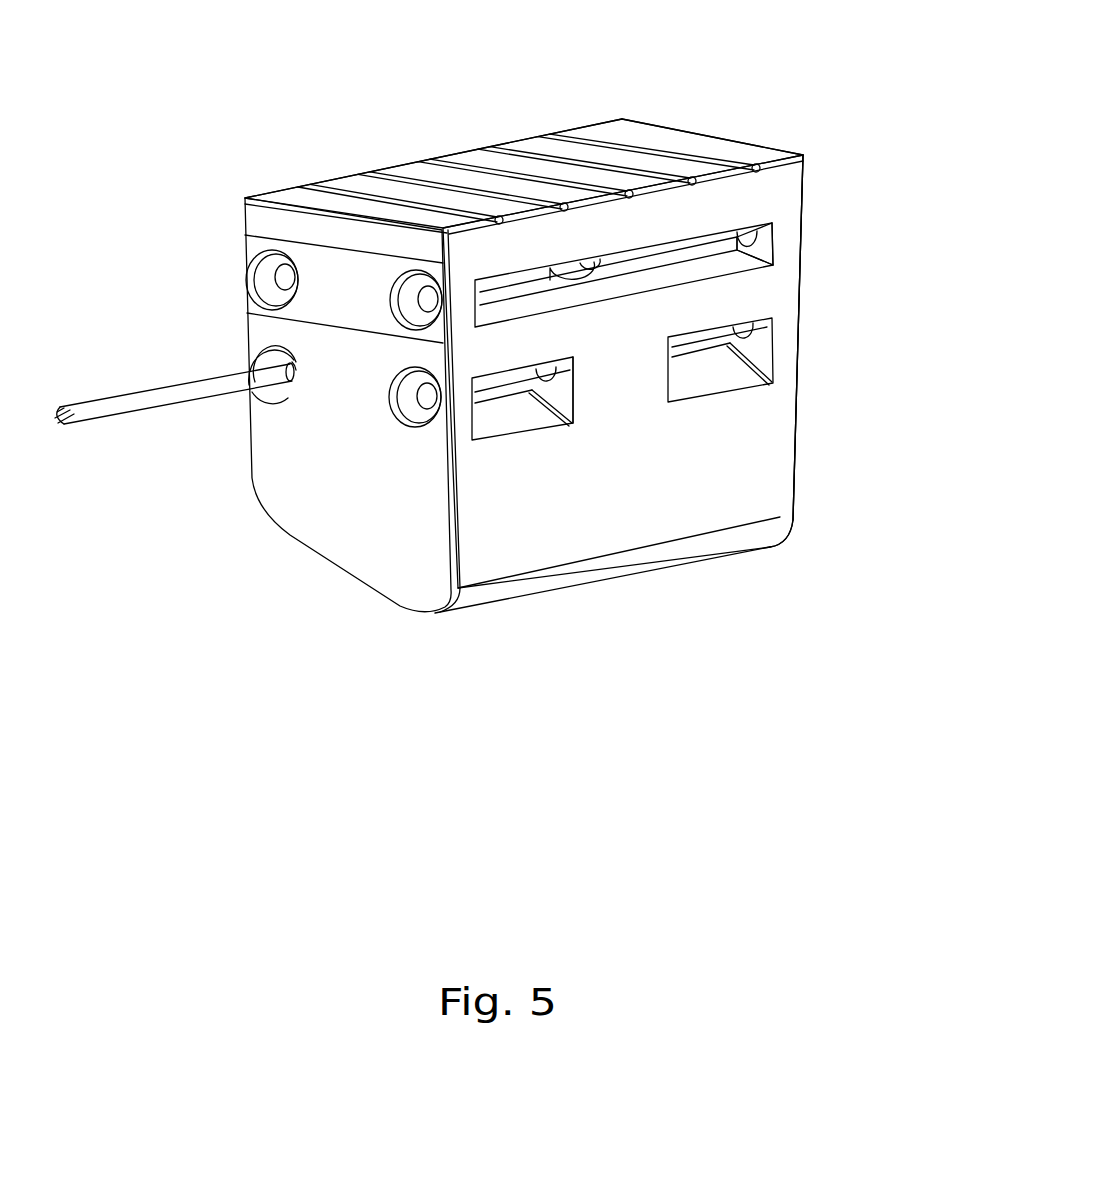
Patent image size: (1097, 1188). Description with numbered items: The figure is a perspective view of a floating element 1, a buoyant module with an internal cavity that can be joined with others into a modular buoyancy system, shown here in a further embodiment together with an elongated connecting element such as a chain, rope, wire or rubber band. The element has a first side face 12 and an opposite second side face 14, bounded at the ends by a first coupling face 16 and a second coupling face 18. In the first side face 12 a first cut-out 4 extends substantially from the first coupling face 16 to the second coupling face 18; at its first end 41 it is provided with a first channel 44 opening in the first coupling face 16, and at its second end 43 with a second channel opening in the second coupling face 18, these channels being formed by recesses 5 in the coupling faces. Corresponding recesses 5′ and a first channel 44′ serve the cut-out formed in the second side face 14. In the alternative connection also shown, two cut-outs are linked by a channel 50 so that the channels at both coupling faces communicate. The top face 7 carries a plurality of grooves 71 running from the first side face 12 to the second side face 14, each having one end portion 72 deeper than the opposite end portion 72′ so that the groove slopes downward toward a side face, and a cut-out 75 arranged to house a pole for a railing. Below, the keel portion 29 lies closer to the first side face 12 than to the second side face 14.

The floating element 1 is at (283, 103).
The first coupling face 16 is at (257, 247).
The recesses 5 is at (390, 293).
The first channel 44 is at (438, 303).
The first end 41 is at (487, 280).
The end portion 72 is at (445, 228).
The opposite end portion 72′ is at (470, 215).
The grooves 71 is at (580, 205).
The second side face 14 is at (580, 128).
The top face 7 is at (642, 127).
The second coupling face 18 is at (663, 127).
The cut-out 75 is at (750, 228).
The second end 43 is at (770, 222).
The first cut-out 4 is at (806, 200).
The first side face 12 is at (797, 240).
The recesses 5′ is at (247, 283).
The first channel 44′ is at (280, 283).
The channel 50 is at (575, 397).
The keel portion 29 is at (772, 540).